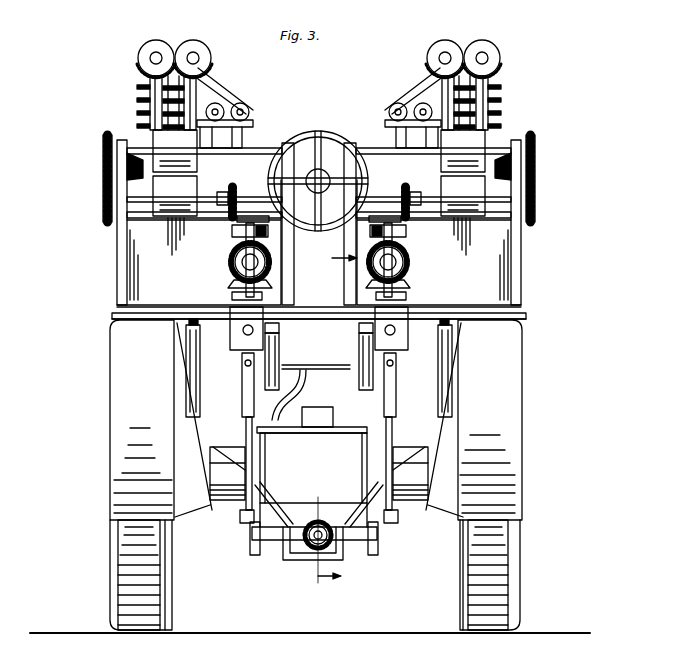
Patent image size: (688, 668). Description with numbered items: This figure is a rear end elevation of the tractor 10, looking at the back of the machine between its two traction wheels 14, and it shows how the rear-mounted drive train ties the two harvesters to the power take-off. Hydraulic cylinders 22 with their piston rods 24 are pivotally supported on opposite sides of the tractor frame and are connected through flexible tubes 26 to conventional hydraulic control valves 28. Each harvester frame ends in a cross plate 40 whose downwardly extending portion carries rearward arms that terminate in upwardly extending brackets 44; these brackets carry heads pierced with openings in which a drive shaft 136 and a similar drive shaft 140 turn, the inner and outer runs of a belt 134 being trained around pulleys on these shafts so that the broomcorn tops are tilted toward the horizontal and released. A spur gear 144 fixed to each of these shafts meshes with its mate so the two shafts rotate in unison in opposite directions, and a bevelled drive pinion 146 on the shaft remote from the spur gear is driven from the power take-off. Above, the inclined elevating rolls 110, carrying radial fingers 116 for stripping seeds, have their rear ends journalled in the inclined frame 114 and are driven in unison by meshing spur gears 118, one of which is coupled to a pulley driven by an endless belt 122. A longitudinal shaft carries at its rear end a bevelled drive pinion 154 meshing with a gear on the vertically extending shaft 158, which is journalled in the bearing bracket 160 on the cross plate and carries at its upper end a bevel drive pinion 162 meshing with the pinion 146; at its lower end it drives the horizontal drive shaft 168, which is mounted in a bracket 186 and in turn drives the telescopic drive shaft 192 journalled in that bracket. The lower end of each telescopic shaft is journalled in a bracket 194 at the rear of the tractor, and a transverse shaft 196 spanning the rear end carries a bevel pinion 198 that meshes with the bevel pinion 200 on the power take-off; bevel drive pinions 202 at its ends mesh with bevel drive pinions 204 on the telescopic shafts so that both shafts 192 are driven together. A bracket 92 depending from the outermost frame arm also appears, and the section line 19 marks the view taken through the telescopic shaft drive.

The tractor 10 is at (119, 414).
The traction wheels 14 is at (128, 568).
The section line / drive wheel 19 is at (318, 363).
The hydraulic cylinders 22 is at (190, 353).
The piston rods 24 is at (177, 323).
The flexible tubes 26 is at (208, 431).
The hydraulic control valves 28 is at (348, 352).
The cross plate 40 is at (128, 280).
The upwardly extending brackets 44 is at (118, 230).
The bracket 92 is at (118, 455).
The elevating rolls 110 is at (137, 76).
The frame 114 is at (137, 100).
The radial fingers 116 is at (137, 118).
The spur gears 118 is at (192, 50).
The endless belt 122 is at (230, 84).
The belt 134 is at (319, 151).
The drive shaft 136 is at (155, 220).
The drive shaft 140 is at (235, 140).
The spur gear 144 is at (103, 187).
The bevelled drive pinion 146 is at (253, 147).
The bevelled drive pinion 154 is at (235, 262).
The vertically extending shaft 158 is at (230, 255).
The bearing bracket 160 is at (232, 231).
The bevel drive pinion 162 is at (240, 198).
The drive shaft 168 is at (394, 336).
The bracket 186 is at (264, 321).
The telescopic drive shaft 192 is at (240, 410).
The bracket 194 is at (212, 490).
The transverse shaft 196 is at (334, 556).
The bevel pinion 198 is at (298, 527).
The bevel pinion 200 is at (313, 521).
The bevel drive pinions 202 is at (252, 542).
The bevel drive pinions 204 is at (240, 517).